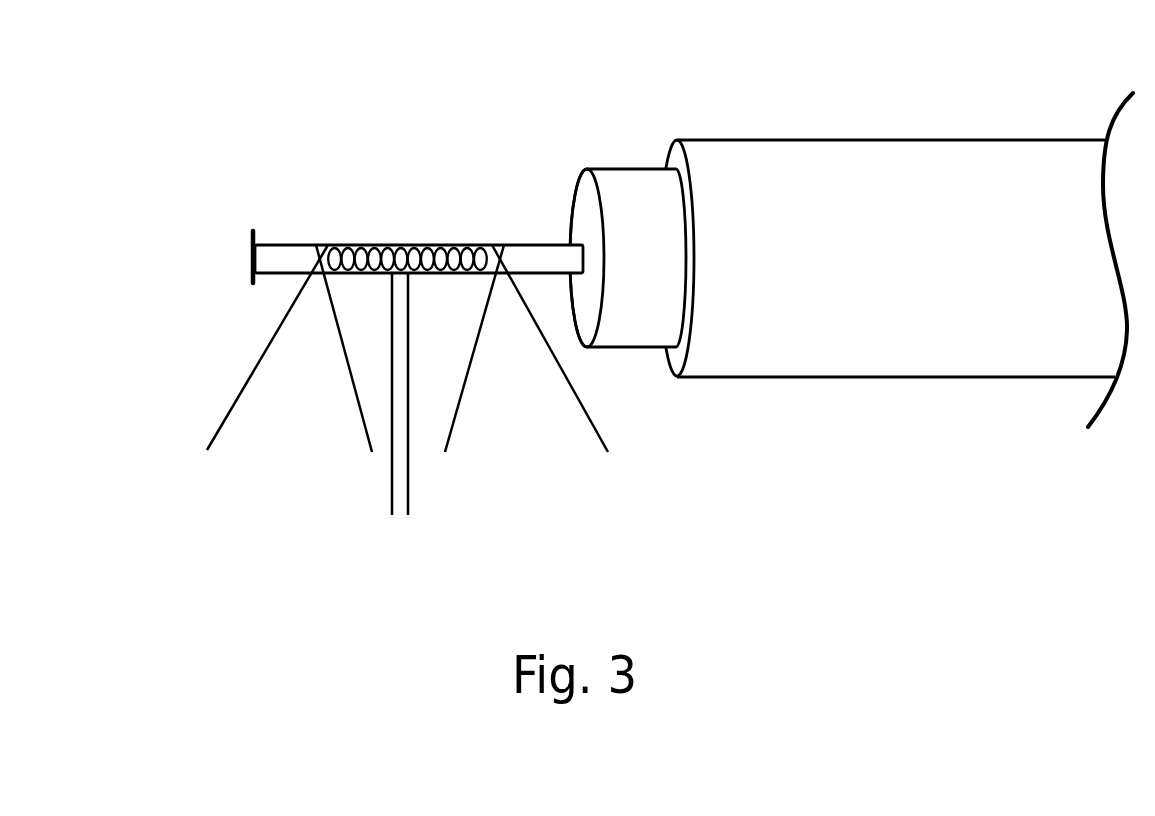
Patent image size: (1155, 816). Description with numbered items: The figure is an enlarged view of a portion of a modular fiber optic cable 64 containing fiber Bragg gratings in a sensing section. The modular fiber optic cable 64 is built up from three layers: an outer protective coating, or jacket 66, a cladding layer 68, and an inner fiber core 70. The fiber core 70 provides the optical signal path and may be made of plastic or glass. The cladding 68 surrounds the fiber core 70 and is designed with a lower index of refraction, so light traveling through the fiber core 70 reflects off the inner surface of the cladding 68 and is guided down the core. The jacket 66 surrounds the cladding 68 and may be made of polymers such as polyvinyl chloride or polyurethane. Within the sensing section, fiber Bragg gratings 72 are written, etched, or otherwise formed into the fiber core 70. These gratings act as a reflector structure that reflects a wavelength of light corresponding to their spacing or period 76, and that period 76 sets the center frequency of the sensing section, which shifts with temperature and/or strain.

The modular fiber optic cable 64 is at (191, 107).
The jacket 66 is at (727, 162).
The cladding layer 68 is at (616, 294).
The fiber core 70 is at (290, 260).
The fiber Bragg gratings 72 is at (398, 242).
The period 76 is at (336, 477).